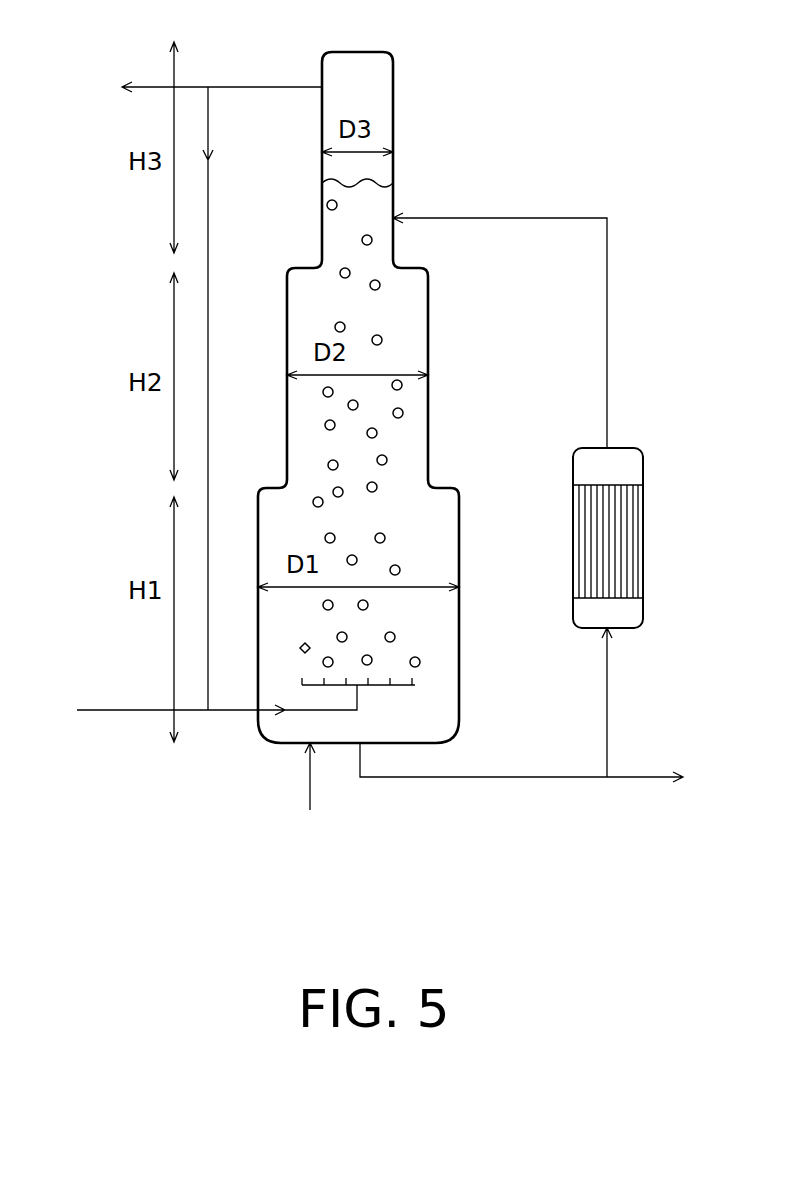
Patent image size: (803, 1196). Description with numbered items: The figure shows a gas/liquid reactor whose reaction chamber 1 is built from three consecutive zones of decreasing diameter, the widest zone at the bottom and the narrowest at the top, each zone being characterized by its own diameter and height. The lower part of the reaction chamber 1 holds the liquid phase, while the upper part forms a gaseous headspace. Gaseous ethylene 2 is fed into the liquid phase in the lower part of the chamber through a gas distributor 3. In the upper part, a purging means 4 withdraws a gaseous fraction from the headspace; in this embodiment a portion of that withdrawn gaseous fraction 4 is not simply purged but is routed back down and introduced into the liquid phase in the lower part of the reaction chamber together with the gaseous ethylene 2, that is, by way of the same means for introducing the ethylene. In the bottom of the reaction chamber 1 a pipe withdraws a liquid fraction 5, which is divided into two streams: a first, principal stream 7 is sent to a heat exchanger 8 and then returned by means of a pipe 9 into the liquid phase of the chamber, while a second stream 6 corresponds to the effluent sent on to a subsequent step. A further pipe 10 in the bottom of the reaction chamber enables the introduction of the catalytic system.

The reaction chamber 1 is at (265, 482).
The gaseous ethylene 2 is at (137, 710).
The gas distributor 3 is at (303, 644).
The purging means 4 is at (298, 86).
The pipe for withdrawing a liquid fraction 5 is at (470, 777).
The second stream 6 is at (627, 777).
The first principal stream 7 is at (607, 688).
The heat exchanger 8 is at (590, 448).
The pipe 9 is at (510, 218).
The pipe for introducing the catalytic system 10 is at (310, 775).